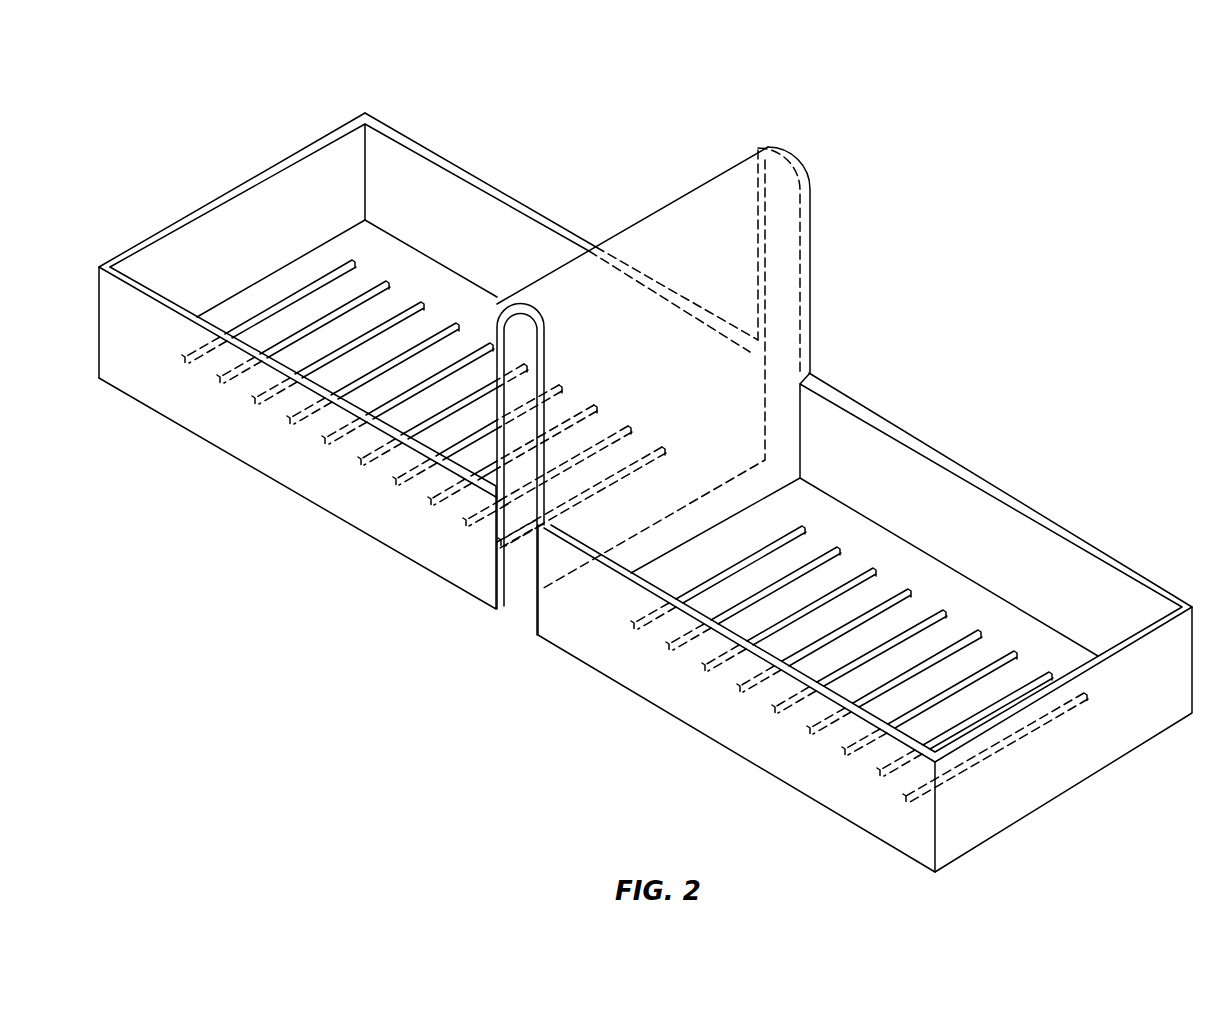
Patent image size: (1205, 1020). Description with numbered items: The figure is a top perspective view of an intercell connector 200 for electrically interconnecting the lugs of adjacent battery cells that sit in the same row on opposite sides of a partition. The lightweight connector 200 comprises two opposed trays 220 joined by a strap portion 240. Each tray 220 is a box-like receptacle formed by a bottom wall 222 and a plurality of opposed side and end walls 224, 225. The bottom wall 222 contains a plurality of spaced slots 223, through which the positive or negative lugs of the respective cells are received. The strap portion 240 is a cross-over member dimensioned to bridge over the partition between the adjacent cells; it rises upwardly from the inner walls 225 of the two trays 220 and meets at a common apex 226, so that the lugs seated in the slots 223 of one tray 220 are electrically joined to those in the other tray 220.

The intercell connector 200 is at (942, 93).
The tray 220 is at (645, 482).
The bottom wall 222 is at (417, 410).
The slots 223 is at (335, 349).
The side walls 224 is at (520, 247).
The end walls 225 is at (270, 203).
The common apex 226 is at (712, 178).
The strap portion 240 is at (810, 267).